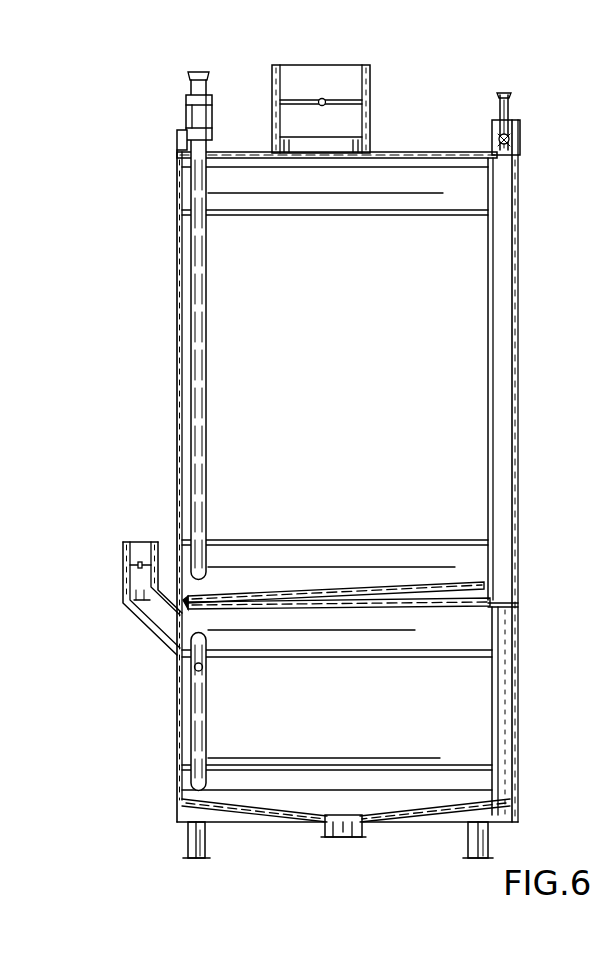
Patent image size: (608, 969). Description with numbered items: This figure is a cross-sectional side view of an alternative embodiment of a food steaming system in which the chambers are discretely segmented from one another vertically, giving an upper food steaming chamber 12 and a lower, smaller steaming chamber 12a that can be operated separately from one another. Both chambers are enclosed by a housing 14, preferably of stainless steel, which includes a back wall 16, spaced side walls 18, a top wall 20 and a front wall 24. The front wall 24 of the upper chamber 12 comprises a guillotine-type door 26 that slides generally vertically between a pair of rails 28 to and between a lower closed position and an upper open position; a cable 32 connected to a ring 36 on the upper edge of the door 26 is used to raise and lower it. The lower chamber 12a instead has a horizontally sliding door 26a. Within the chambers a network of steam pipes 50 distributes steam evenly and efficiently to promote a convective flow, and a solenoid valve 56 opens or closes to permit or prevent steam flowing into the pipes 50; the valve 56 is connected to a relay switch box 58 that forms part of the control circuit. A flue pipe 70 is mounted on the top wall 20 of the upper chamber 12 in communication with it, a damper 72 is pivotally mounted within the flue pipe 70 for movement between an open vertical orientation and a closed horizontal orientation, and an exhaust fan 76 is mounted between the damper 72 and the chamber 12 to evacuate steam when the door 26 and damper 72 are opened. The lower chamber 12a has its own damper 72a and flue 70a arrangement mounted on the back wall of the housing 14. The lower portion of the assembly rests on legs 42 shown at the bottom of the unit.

The food steaming chamber 12 is at (332, 371).
The lower steaming chamber 12a is at (346, 712).
The housing 14 is at (170, 230).
The back wall 16 is at (178, 292).
The side walls 18 is at (436, 440).
The top wall 20 is at (449, 150).
The front wall 24 is at (494, 343).
The guillotine-type door 26 is at (510, 250).
The horizontally sliding door 26a is at (510, 722).
The rails 28 is at (518, 131).
The cable 32 is at (510, 107).
The ring 36 is at (512, 150).
The legs 42 is at (206, 840).
The steam pipes 50 is at (206, 284).
The solenoid valve 56 is at (190, 118).
The relay switch box 58 is at (180, 138).
The flue pipe 70 is at (372, 78).
The damper 72 is at (292, 100).
The exhaust fan 76 is at (322, 152).
The flue 70a is at (122, 582).
The damper 72a is at (140, 562).